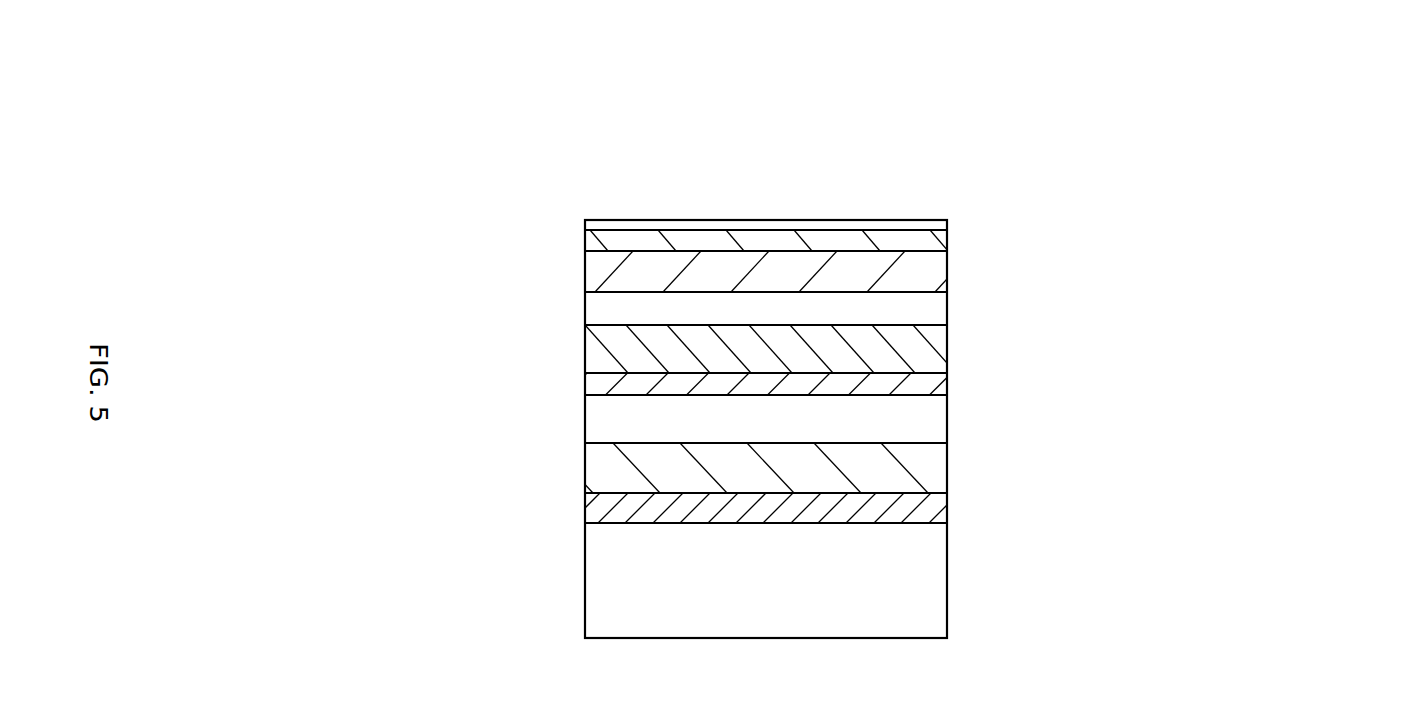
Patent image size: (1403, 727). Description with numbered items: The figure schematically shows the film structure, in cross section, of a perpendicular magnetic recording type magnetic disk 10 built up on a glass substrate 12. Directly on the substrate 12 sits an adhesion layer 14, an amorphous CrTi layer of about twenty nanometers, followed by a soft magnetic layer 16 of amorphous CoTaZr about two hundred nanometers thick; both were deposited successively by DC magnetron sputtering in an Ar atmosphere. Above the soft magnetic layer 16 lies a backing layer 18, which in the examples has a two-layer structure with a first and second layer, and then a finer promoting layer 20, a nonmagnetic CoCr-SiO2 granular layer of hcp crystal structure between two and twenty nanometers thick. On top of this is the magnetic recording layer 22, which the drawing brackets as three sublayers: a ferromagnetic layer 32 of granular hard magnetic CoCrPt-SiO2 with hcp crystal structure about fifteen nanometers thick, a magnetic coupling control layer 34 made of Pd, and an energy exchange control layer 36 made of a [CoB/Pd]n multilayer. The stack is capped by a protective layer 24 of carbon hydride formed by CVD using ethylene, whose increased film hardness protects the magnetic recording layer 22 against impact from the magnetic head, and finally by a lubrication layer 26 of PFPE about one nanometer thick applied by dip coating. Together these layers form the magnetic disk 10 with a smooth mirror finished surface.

The magnetic disk 10 is at (1222, 56).
The substrate 12 is at (933, 585).
The adhesion layer 14 is at (933, 513).
The soft magnetic layer 16 is at (933, 467).
The backing layer 18 is at (933, 423).
The finer promoting layer 20 is at (943, 383).
The magnetic recording layer 22 is at (792, 293).
The protective layer 24 is at (943, 237).
The lubrication layer 26 is at (898, 222).
The ferromagnetic layer 32 is at (593, 358).
The magnetic coupling control layer 34 is at (597, 310).
The energy exchange control layer 36 is at (592, 263).